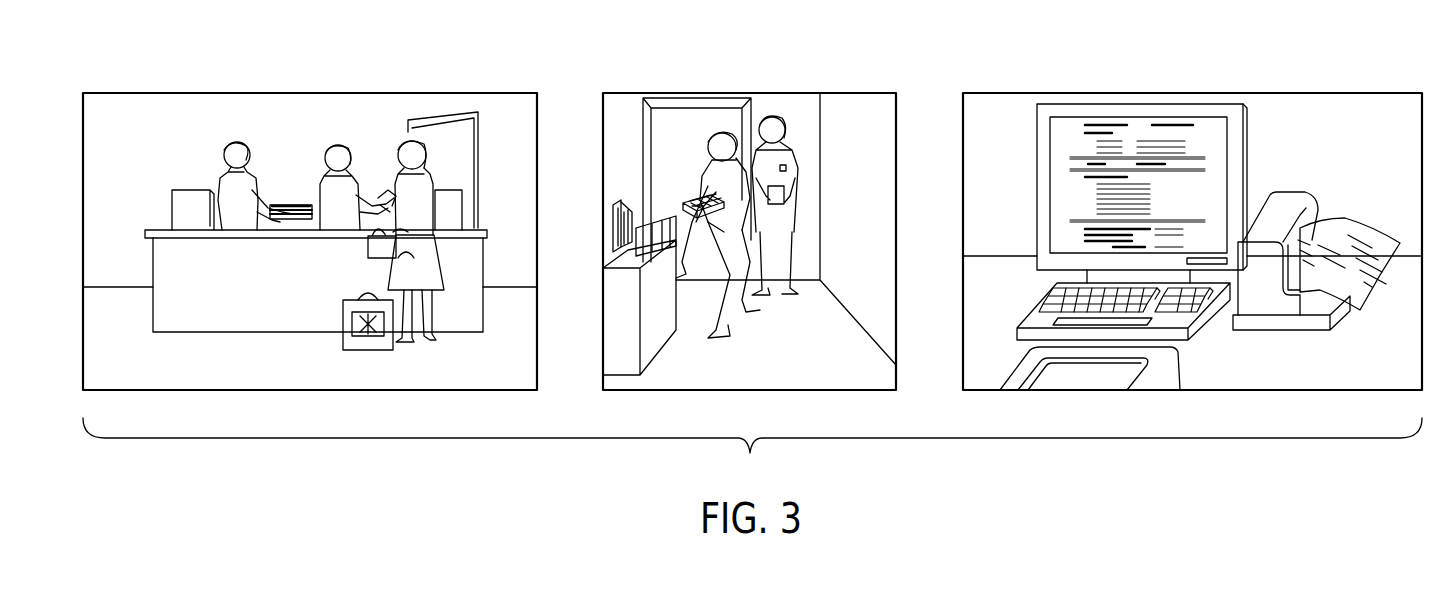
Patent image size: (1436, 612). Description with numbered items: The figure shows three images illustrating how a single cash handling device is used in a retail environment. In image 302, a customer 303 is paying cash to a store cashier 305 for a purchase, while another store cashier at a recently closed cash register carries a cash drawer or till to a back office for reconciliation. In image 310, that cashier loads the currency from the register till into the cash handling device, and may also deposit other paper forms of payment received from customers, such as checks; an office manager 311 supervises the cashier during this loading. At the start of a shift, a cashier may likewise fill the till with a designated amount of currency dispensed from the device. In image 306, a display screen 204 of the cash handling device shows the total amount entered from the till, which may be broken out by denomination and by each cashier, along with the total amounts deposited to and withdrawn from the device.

The image 302 is at (120, 112).
The store cashier 305 is at (334, 145).
The customer 303 is at (430, 265).
The image 310 is at (847, 112).
The office manager 311 is at (795, 212).
The display screen 204 is at (1075, 130).
The image 306 is at (1343, 110).